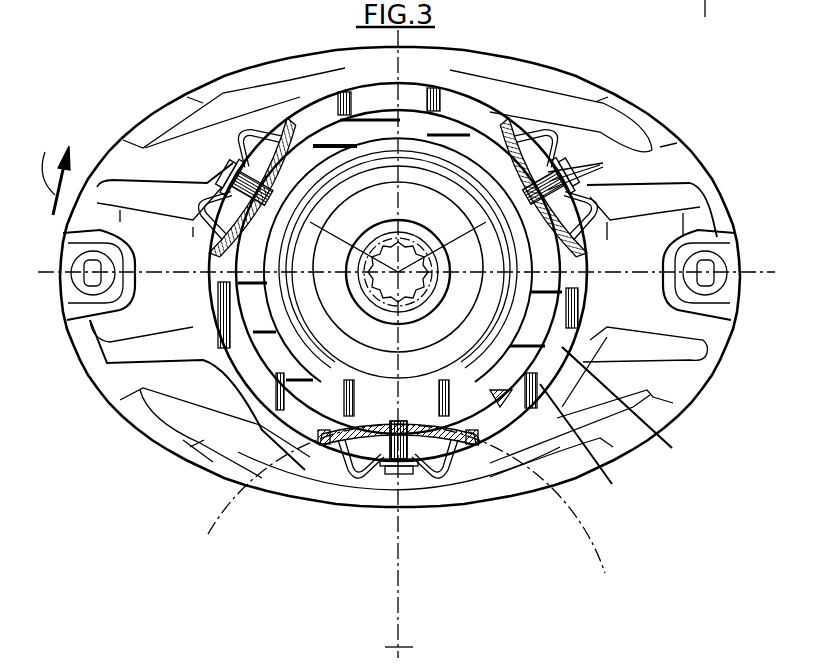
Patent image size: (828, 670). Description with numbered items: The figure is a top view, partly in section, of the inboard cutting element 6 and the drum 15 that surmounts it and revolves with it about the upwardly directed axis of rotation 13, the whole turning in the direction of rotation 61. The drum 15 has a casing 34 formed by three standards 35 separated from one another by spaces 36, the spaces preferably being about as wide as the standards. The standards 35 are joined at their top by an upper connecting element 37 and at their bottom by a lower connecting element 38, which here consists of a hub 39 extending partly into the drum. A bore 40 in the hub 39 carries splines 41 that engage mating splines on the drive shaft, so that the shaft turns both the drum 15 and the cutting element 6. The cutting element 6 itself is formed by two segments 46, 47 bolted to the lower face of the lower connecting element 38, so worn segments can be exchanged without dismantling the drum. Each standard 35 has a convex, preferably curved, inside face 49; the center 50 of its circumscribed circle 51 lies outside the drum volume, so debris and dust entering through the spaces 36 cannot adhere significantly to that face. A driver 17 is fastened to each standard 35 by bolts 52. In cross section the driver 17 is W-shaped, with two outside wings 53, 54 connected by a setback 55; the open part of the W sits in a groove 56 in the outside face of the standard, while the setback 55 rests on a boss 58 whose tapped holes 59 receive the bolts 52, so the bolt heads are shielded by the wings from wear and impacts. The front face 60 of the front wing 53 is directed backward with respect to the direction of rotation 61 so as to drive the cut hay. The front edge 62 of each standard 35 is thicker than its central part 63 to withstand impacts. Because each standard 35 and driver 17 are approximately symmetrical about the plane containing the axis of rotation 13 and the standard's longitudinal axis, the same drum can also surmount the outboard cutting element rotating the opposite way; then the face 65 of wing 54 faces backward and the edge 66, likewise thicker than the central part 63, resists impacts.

The cutting element 6 is at (125, 125).
The axis of rotation 13 is at (425, 300).
The drum 15 is at (213, 334).
The driver 17 is at (683, 183).
The casing 34 is at (474, 86).
The standard 35 is at (260, 165).
The space 36 is at (326, 113).
The upper connecting element 37 is at (180, 430).
The lower connecting element 38 is at (592, 445).
The hub 39 is at (397, 267).
The bore 40 is at (398, 272).
The splines 41 is at (428, 266).
The segment 46 is at (177, 112).
The segment 47 is at (652, 130).
The inside face 49 is at (318, 158).
The center 50 is at (398, 647).
The circumscribed circle 51 is at (212, 533).
The bolt 52 is at (407, 520).
The outside wing 53 is at (352, 472).
The outside wing 54 is at (437, 477).
The setback 55 is at (417, 470).
The groove 56 is at (340, 470).
The boss 58 is at (247, 197).
The tapped hole 59 is at (400, 421).
The front face 60 is at (355, 478).
The direction of rotation 61 is at (51, 170).
The front edge 62 is at (328, 436).
The central part 63 is at (350, 424).
The face 65 is at (478, 450).
The edge 66 is at (480, 436).